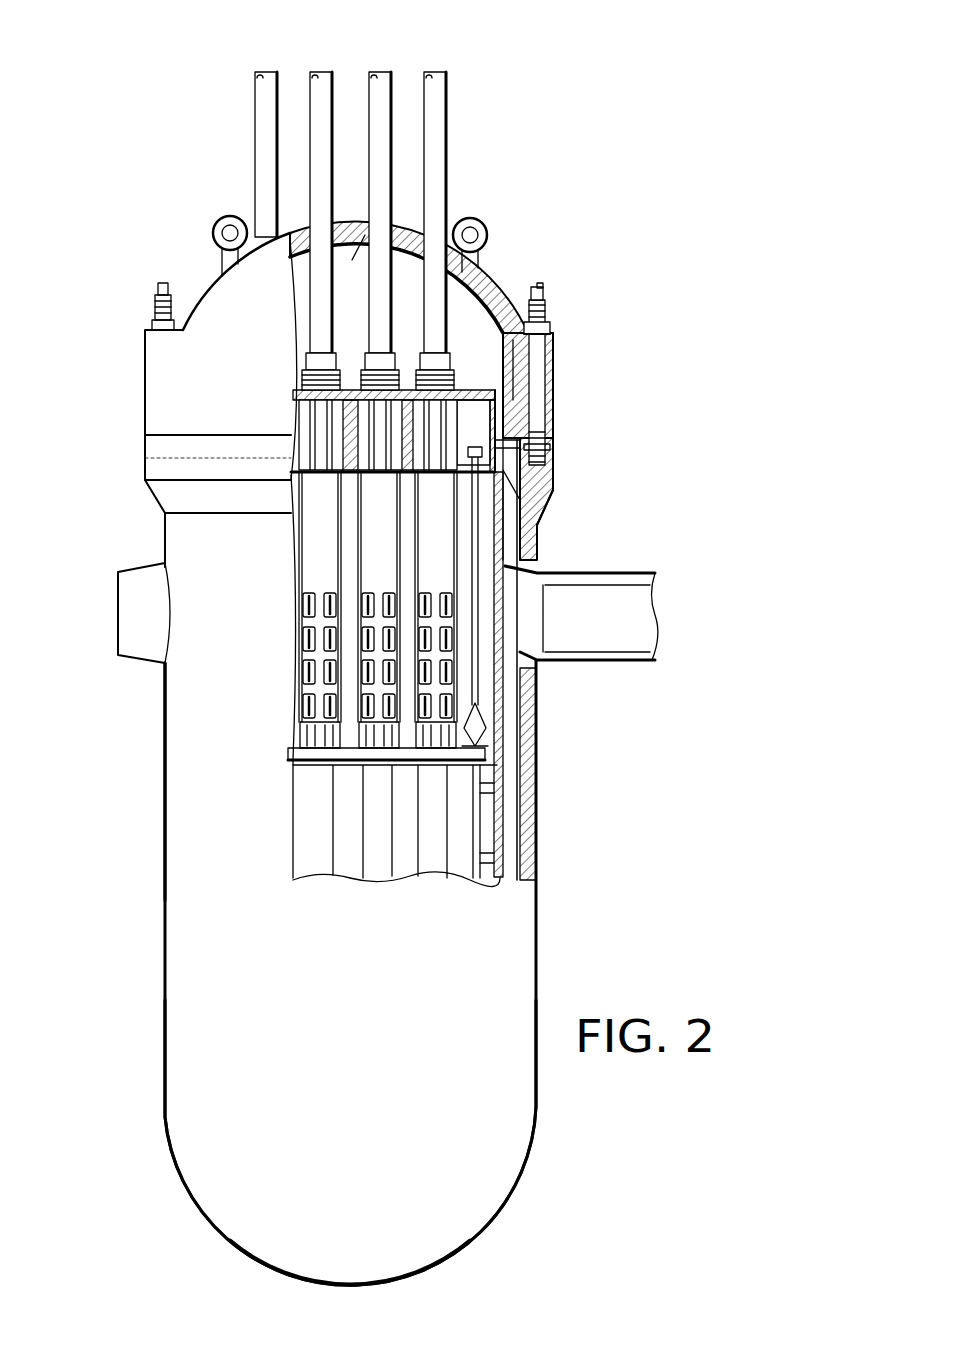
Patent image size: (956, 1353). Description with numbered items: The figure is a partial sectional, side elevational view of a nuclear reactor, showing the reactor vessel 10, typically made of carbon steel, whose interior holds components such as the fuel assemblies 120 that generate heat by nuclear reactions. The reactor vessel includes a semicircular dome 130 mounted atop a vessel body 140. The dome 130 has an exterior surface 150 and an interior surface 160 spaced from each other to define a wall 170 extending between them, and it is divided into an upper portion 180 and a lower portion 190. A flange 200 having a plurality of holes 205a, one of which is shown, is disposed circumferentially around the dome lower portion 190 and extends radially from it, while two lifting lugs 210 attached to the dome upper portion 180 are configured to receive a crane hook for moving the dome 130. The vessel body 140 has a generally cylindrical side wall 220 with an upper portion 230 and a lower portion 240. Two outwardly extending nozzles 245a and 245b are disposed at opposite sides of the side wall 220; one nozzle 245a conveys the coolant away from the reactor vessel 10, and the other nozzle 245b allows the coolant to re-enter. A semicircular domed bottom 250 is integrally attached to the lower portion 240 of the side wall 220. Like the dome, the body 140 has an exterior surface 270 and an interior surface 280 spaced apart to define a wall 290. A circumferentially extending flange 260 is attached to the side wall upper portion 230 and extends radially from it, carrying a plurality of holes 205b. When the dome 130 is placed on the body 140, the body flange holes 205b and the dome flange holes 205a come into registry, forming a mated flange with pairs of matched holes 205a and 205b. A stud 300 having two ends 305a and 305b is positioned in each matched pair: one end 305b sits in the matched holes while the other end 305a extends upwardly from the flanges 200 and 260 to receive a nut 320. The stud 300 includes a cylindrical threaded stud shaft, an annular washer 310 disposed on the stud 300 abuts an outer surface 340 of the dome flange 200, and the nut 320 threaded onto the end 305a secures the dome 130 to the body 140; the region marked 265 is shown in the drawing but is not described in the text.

The reactor vessel 10 is at (382, 28).
The fuel assemblies 120 is at (325, 572).
The semicircular dome 130 is at (219, 265).
The vessel body 140 is at (298, 972).
The exterior surface 150 is at (483, 272).
The interior surface 160 is at (466, 300).
The wall 170 is at (362, 248).
The upper portion 180 is at (215, 203).
The lower portion 190 is at (183, 381).
The flange 200 is at (573, 391).
The holes 205a is at (554, 400).
The holes 205b is at (554, 422).
The lifting lugs 210 is at (240, 262).
The side wall 220 is at (165, 712).
The upper portion 230 is at (174, 521).
The lower portion 240 is at (289, 1131).
The nozzle 245a is at (122, 572).
The nozzle 245b is at (602, 572).
The semicircular domed bottom 250 is at (268, 1280).
The flange 260 is at (144, 468).
The flange transition 265 is at (541, 512).
The exterior surface 270 is at (540, 745).
The interior surface 280 is at (510, 850).
The wall 290 is at (537, 800).
The stud 300 is at (541, 296).
The end 305a is at (522, 292).
The end 305b is at (549, 468).
The annular washer 310 is at (549, 333).
The nut 320 is at (549, 308).
The outer surface 340 is at (554, 336).